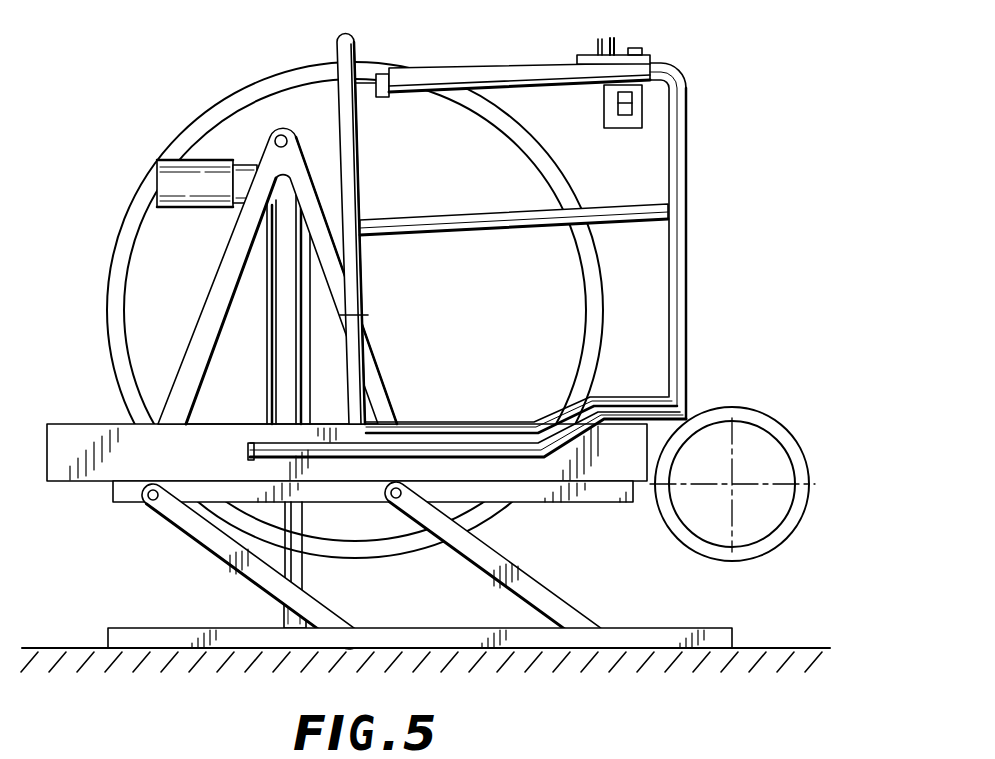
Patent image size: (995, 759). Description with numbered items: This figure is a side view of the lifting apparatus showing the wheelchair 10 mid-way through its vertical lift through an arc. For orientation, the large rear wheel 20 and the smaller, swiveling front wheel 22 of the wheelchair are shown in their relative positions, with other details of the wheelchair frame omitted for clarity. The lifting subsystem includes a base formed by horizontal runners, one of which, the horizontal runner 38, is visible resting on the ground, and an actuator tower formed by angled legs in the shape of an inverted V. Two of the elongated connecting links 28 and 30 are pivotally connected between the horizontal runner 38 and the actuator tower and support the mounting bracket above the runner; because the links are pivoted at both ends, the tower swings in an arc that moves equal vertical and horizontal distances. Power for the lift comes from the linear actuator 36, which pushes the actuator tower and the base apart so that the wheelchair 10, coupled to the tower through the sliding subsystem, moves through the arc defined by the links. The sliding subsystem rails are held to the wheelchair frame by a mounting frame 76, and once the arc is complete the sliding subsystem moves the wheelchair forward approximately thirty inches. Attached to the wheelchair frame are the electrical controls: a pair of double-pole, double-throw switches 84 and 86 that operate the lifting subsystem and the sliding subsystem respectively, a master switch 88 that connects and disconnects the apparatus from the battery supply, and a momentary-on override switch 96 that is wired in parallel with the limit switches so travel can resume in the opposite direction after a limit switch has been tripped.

The wheelchair 10 is at (454, 246).
The large rear wheel 20 is at (110, 346).
The swiveling front wheel 22 is at (726, 556).
The connecting link 28 is at (568, 604).
The connecting link 30 is at (332, 614).
The linear actuator 36 is at (163, 167).
The horizontal runner 38 is at (147, 628).
The mounting frame 76 is at (122, 504).
The double-pole, double-throw switch 84 is at (589, 39).
The double-pole, double-throw switch 86 is at (625, 37).
The master switch 88 is at (624, 138).
The override switch 96 is at (652, 46).